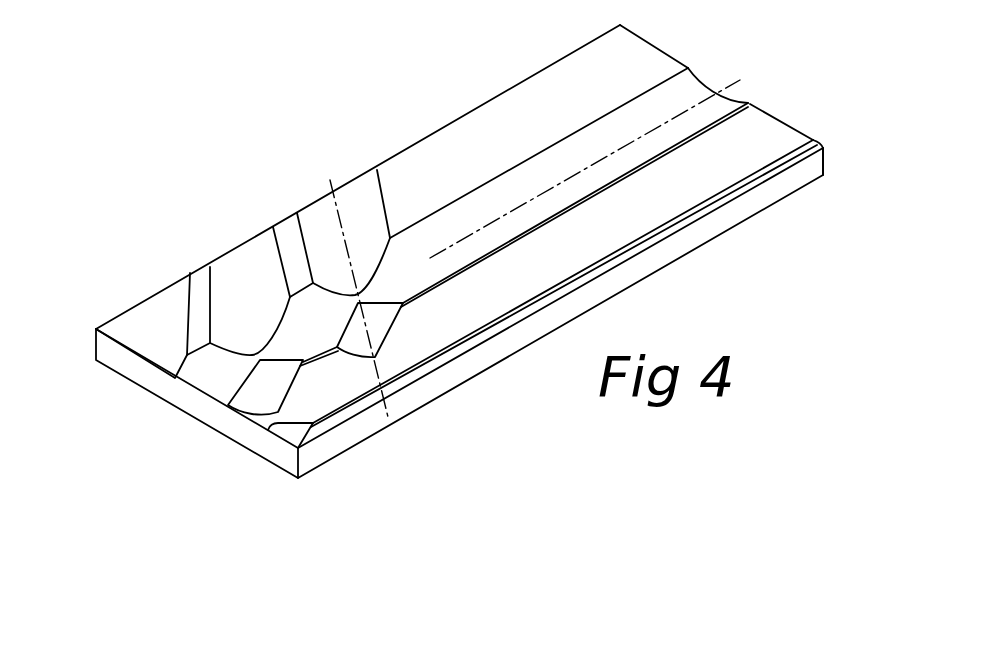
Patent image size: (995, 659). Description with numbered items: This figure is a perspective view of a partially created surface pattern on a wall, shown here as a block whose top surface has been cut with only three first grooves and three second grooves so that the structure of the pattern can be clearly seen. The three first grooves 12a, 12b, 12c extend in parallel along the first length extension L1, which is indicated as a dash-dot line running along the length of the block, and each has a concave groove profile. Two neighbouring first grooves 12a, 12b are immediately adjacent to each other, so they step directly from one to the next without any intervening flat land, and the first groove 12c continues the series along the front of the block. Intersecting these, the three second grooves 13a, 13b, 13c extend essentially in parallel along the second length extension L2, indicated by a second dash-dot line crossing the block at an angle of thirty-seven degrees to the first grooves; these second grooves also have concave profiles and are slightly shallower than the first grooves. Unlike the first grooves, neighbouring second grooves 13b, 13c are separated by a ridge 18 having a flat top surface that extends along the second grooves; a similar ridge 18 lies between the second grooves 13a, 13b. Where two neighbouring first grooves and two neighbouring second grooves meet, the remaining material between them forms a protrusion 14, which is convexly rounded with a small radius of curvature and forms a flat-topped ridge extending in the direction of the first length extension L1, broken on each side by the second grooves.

The first groove 12a is at (697, 90).
The first groove 12b is at (767, 130).
The first groove 12c is at (738, 189).
The second groove 13a is at (133, 327).
The second groove 13b is at (232, 275).
The second groove 13c is at (366, 188).
The protrusion 14 is at (303, 357).
The ridge 18 is at (181, 284).
The first length extension L1 is at (601, 156).
The second length extension L2 is at (352, 284).